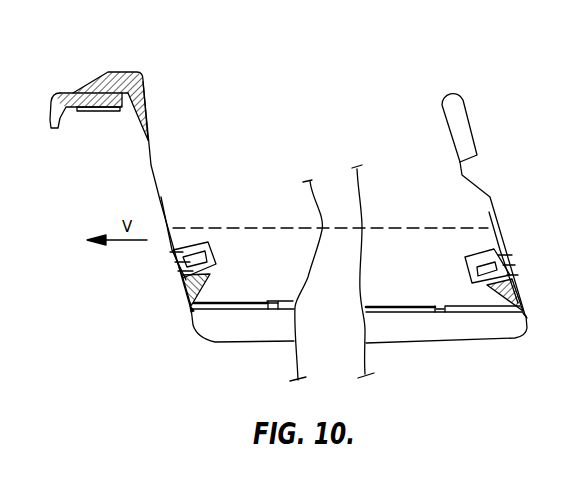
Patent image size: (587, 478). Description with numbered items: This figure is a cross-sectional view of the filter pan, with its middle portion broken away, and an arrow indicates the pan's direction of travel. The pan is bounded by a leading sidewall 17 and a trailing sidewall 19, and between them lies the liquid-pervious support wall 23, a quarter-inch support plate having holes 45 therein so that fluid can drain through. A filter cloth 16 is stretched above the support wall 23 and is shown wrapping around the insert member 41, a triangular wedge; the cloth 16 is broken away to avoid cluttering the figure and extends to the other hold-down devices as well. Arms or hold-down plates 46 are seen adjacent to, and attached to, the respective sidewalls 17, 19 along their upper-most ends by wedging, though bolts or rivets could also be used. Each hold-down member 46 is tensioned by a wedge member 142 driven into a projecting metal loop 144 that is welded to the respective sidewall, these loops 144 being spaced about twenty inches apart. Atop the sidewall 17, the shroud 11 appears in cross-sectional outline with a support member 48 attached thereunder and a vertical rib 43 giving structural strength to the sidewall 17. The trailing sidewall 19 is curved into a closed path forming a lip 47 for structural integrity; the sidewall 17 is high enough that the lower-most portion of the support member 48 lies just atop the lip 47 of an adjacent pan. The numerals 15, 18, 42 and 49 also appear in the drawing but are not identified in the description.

The shroud 11 is at (75, 91).
The reference plane 15 is at (203, 225).
The filter cloth 16 is at (245, 302).
The sidewall 17 is at (157, 196).
The base shell 18 is at (215, 342).
The trailing sidewall 19 is at (495, 220).
The liquid-pervious support wall 23 is at (287, 301).
The insert member 41 is at (188, 292).
The cross ribs 42 is at (513, 277).
The vertical rib 43 is at (123, 72).
The holes 45 is at (436, 311).
The arm or hold-down plate 46 is at (172, 218).
The lip 47 is at (475, 142).
The support member 48 is at (102, 112).
The foot 49 is at (192, 313).
The wedge member 142 is at (487, 252).
The projecting metal loop 144 is at (213, 242).